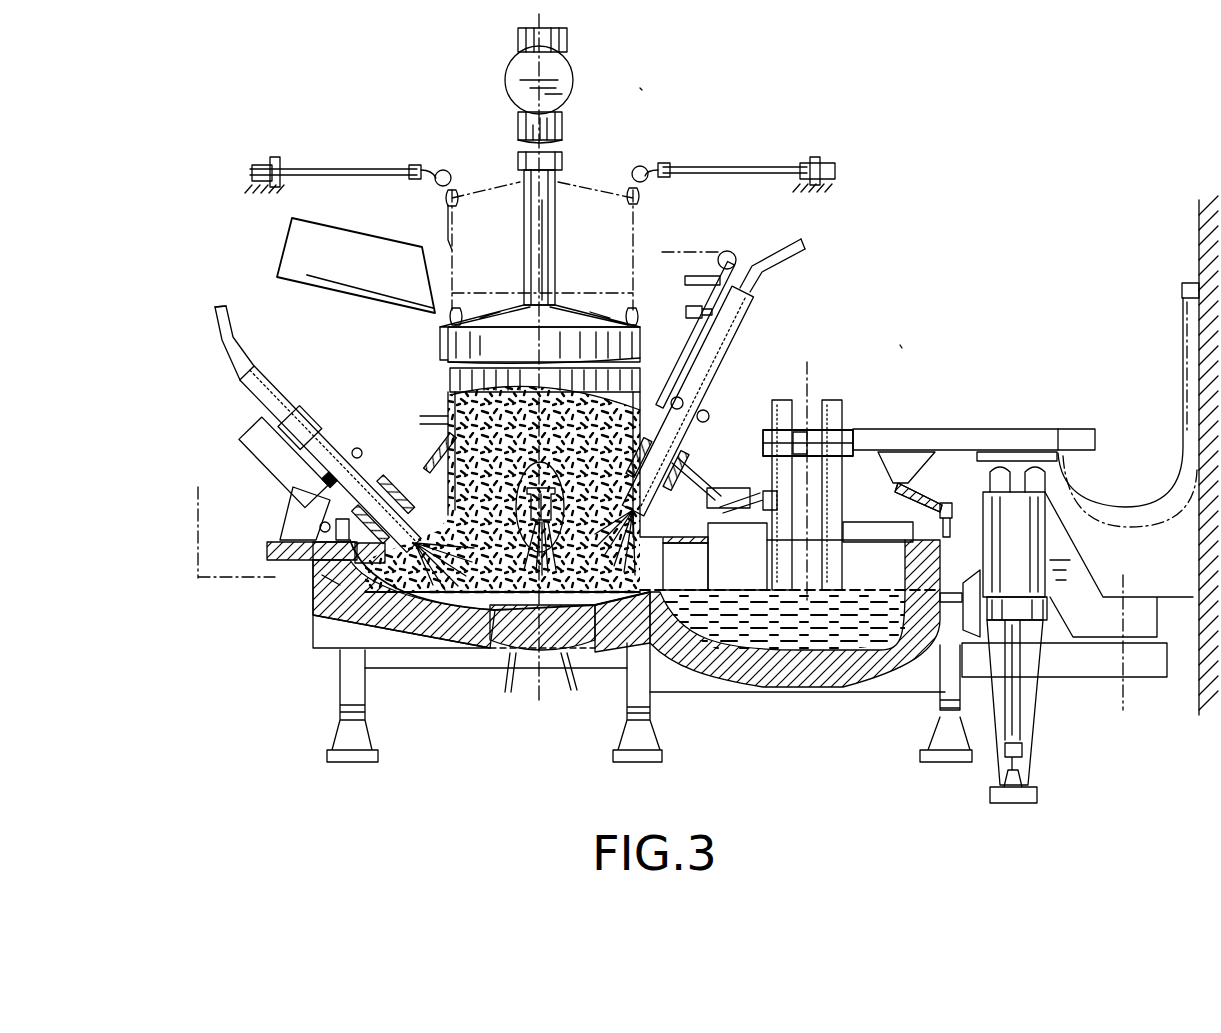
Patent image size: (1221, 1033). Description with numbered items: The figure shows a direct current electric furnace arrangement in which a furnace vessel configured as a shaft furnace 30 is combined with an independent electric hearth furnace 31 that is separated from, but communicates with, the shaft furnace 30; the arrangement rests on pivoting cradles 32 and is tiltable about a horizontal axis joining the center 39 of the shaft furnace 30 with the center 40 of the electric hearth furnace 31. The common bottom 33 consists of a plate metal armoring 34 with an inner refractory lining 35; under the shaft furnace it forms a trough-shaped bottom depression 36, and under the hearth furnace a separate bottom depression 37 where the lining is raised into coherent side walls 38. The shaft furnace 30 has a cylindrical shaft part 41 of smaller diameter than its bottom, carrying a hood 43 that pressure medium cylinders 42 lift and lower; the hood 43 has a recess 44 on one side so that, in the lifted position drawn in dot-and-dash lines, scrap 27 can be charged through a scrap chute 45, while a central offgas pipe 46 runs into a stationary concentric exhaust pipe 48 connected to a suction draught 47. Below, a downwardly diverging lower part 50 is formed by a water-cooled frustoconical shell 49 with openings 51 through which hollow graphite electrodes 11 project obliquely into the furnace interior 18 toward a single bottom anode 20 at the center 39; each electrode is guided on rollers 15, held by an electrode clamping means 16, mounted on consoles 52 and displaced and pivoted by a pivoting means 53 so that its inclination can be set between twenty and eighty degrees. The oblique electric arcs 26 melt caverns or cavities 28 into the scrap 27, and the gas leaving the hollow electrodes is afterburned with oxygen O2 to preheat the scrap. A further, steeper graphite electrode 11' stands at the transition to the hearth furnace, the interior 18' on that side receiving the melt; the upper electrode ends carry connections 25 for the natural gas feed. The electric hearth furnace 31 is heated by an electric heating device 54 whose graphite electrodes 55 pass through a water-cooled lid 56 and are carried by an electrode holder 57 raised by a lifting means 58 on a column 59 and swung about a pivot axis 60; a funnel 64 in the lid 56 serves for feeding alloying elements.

The graphite electrodes 11 is at (324, 433).
The further graphite electrode 11' is at (708, 386).
The rollers 15 is at (300, 500).
The electrode clamping means 16 is at (313, 422).
The furnace interior 18 is at (294, 593).
The second burner 18' is at (724, 497).
The bottom anode 20 is at (523, 658).
The supply conduit 25 is at (215, 325).
The electric arcs 26 is at (430, 530).
The scrap 27 is at (588, 400).
The caverns or cavities 28 is at (353, 572).
The shaft furnace 30 is at (646, 86).
The electric hearth furnace 31 is at (902, 344).
The pivoting cradles 32 is at (612, 735).
The bottom 33 is at (312, 590).
The plate metal armoring 34 is at (413, 642).
The refractory lining 35 is at (265, 575).
The bottom depression 36 is at (438, 640).
The bottom depression 37 is at (783, 653).
The side walls 38 is at (905, 572).
The center of the shaft furnace 39 is at (536, 343).
The center of the electric hearth furnace 40 is at (808, 386).
The cylindrical shaft part 41 is at (448, 388).
The pressure medium cylinders 42 is at (268, 165).
The hood 43 is at (580, 313).
The recess 44 is at (447, 283).
The scrap chute 45 is at (300, 237).
The offgas pipe 46 is at (550, 202).
The suction draught 47 is at (508, 82).
The exhaust pipe 48 is at (562, 128).
The water-cooled shell 49 is at (392, 472).
The lower part 50 is at (348, 507).
The openings 51 is at (373, 456).
The consoles 52 is at (248, 430).
The pivoting means 53 is at (287, 518).
The electric heating device 54 is at (843, 432).
The graphite electrodes 55 is at (830, 400).
The lid 56 is at (912, 518).
The electrode holder 57 is at (995, 440).
The lifting means 58 is at (1017, 697).
The column 59 is at (1025, 560).
The pivot axis 60 is at (1123, 697).
The funnel 64 is at (920, 455).
The oxygen supply O2 is at (438, 420).